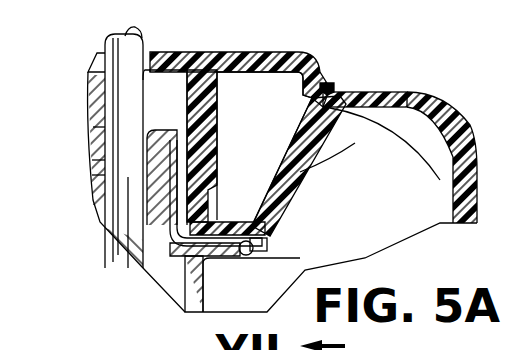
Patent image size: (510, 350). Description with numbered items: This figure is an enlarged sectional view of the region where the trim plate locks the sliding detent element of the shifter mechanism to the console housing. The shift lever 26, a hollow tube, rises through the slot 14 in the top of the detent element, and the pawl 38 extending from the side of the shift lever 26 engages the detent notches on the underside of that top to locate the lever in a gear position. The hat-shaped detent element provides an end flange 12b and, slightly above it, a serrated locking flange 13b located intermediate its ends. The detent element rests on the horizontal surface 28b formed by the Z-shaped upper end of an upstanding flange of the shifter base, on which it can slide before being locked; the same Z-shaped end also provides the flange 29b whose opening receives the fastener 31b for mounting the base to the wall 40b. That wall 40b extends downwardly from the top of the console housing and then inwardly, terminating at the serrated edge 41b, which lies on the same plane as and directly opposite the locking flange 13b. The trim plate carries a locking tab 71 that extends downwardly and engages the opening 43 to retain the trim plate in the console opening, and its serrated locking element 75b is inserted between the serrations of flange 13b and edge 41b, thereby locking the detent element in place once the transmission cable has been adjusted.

The flange 12b is at (176, 252).
The locking flange 13b is at (183, 245).
The slot 14 is at (138, 132).
The shift lever 26 is at (125, 50).
The horizontal surface 28b is at (237, 250).
The flange 29b is at (270, 237).
The fastener 31b is at (268, 244).
The pawl 38 is at (96, 203).
The flange or wall 40b is at (370, 144).
The serrated edge 41b is at (202, 207).
The opening 43 is at (317, 120).
The locking tab 71 is at (324, 86).
The serrated locking element 75b is at (205, 130).